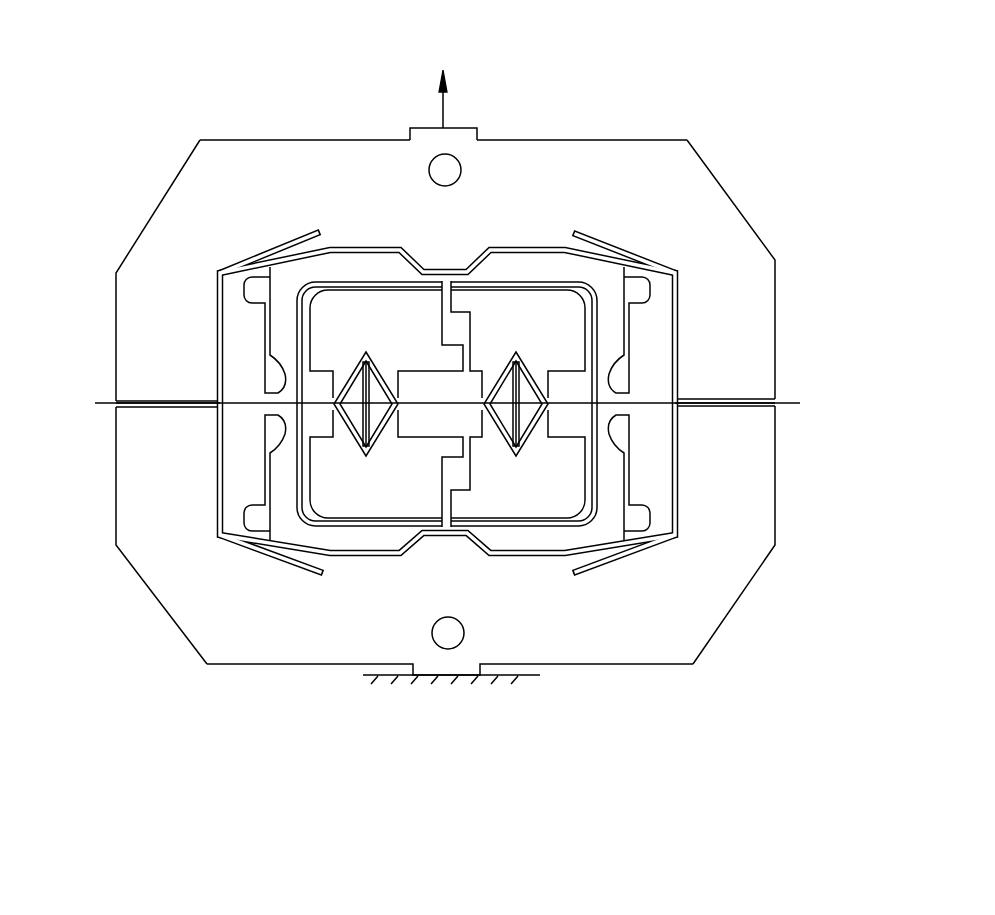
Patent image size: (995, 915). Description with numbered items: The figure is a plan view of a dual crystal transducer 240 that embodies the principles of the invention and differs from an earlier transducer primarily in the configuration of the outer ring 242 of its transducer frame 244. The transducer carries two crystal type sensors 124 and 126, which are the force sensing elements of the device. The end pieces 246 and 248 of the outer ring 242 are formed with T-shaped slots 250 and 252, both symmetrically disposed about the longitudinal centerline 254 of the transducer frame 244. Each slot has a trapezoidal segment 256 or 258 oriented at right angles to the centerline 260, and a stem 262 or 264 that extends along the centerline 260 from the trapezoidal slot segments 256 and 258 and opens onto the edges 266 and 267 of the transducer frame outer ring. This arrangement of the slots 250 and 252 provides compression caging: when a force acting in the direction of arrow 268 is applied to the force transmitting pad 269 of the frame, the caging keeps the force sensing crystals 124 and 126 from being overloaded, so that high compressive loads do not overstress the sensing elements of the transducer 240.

The transducer 240 is at (283, 27).
The outer ring 242 is at (158, 182).
The transducer frame 244 is at (336, 121).
The end piece 246 is at (155, 245).
The end piece 248 is at (694, 172).
The T-shaped slot 250 is at (176, 396).
The T-shaped slot 252 is at (741, 392).
The longitudinal centerline 254 is at (645, 404).
The trapezoidal segment 256 is at (275, 252).
The trapezoidal segment 258 is at (590, 236).
The centerline 260 is at (447, 398).
The stem 262 is at (130, 406).
The stem 264 is at (710, 400).
The edge 266 is at (114, 430).
The edge 267 is at (778, 387).
The arrow 268 is at (447, 102).
The force transmitting pad 269 is at (425, 127).
The crystal type sensor 124 is at (338, 344).
The crystal type sensor 126 is at (499, 352).